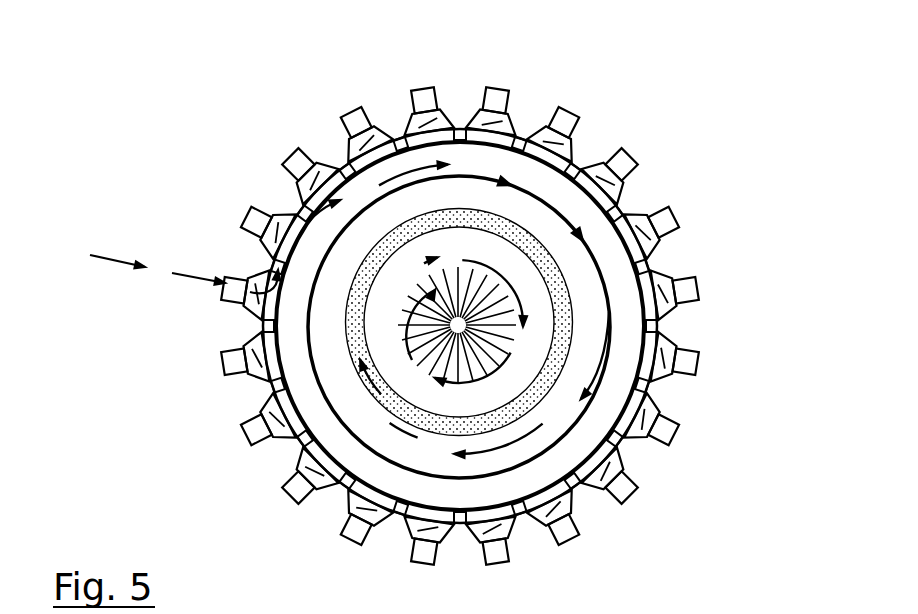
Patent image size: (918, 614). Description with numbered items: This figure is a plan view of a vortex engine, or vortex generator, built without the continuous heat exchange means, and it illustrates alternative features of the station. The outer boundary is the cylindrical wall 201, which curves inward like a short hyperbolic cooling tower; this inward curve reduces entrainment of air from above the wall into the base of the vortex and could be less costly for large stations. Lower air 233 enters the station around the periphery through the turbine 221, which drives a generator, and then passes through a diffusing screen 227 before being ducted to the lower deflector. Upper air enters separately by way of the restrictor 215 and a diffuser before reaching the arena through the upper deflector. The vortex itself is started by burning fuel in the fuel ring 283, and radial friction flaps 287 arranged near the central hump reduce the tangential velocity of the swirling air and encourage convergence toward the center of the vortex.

The cylindrical wall 201 is at (310, 372).
The restrictor 215 is at (647, 187).
The turbine 221 is at (282, 145).
The diffusing screen 227 is at (667, 363).
The lower air 233 is at (492, 265).
The fuel ring 283 is at (355, 345).
The radial friction flaps 287 is at (490, 323).